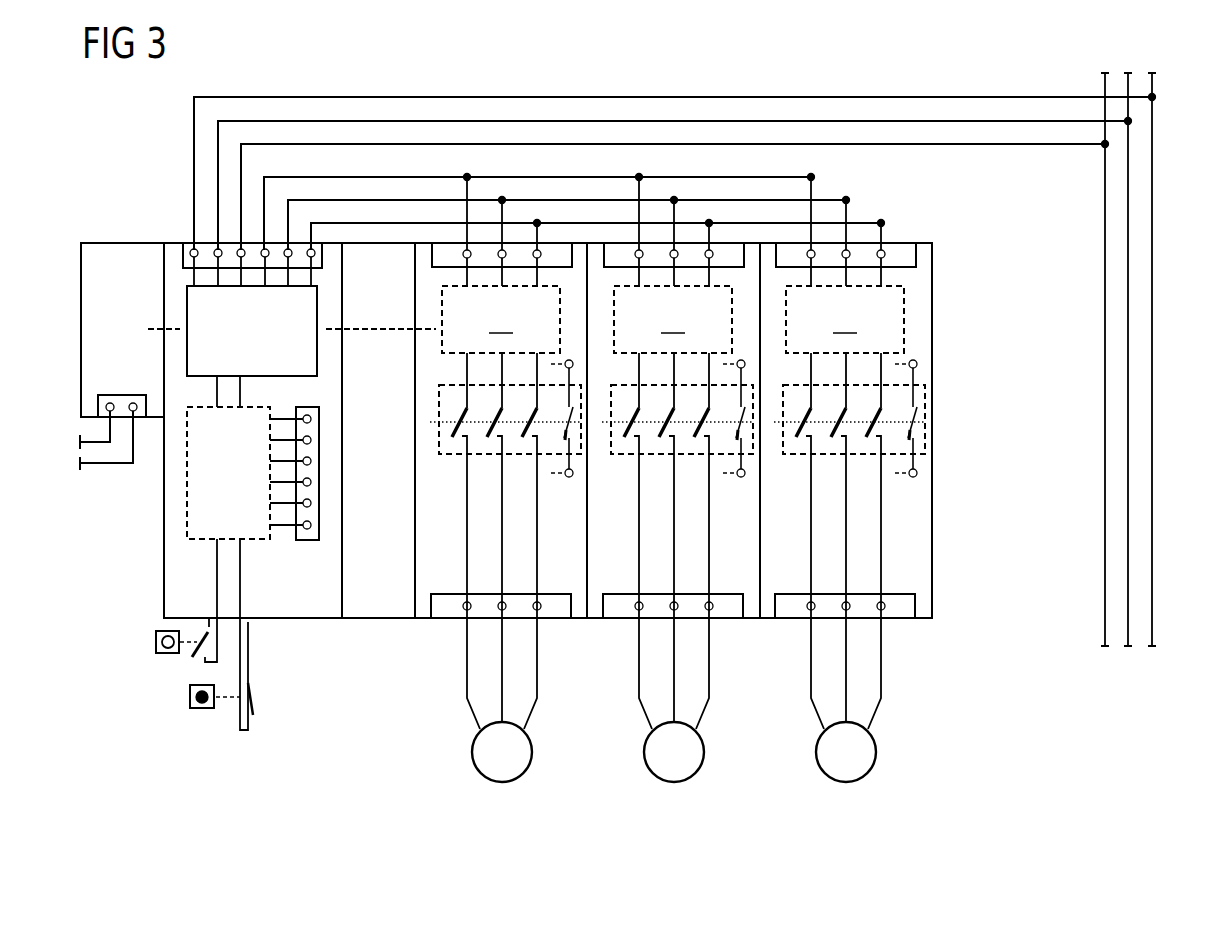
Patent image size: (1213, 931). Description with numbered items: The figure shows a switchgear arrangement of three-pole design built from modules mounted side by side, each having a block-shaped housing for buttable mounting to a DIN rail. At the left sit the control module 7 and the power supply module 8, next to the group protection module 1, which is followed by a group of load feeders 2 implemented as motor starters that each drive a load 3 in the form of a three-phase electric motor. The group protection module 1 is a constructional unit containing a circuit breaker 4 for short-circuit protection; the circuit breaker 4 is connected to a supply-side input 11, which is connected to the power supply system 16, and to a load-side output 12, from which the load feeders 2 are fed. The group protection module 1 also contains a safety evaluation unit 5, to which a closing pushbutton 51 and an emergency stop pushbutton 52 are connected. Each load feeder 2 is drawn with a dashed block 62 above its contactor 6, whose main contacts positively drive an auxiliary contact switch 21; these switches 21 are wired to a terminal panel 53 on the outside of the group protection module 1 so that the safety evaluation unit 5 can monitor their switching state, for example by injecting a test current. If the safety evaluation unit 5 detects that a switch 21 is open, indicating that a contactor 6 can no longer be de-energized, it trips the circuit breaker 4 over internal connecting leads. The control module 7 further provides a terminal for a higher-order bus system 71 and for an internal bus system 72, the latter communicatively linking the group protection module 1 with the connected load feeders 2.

The group protection module 1 is at (313, 605).
The load feeder 2 is at (581, 623).
The load 3 is at (532, 752).
The circuit breaker 4 is at (312, 304).
The safety evaluation unit 5 is at (198, 512).
The contactor 6 is at (485, 457).
The control module 7 is at (119, 241).
The power supply module 8 is at (383, 605).
The supply-side input 11 is at (185, 243).
The load-side output 12 is at (322, 254).
The power supply system 16 is at (1140, 228).
The switch 21 is at (570, 418).
The closing pushbutton 51 is at (167, 658).
The emergency stop pushbutton 52 is at (202, 712).
The terminal panel 53 is at (319, 473).
The overload protection unit 62 is at (673, 319).
The higher-order bus system 71 is at (110, 450).
The internal bus system 72 is at (372, 345).